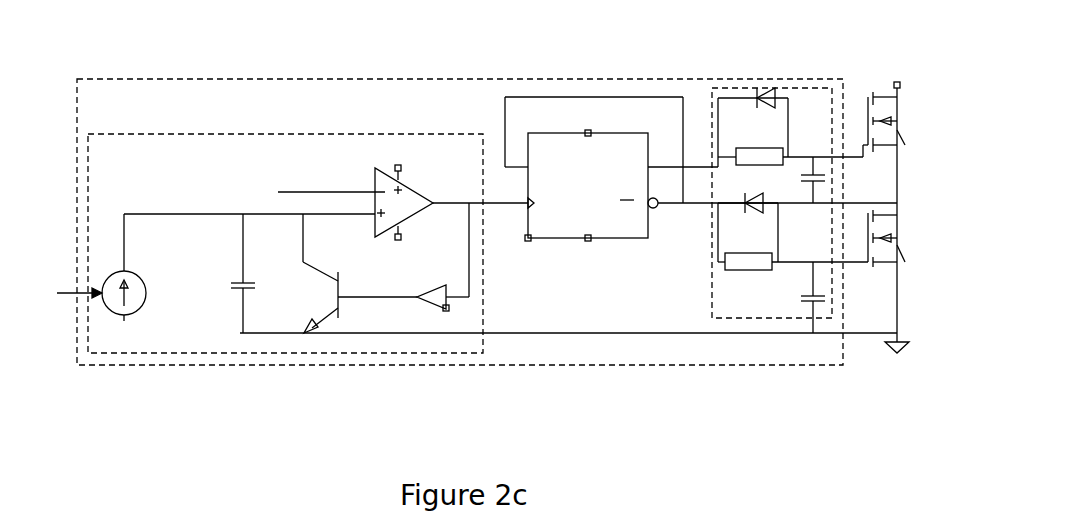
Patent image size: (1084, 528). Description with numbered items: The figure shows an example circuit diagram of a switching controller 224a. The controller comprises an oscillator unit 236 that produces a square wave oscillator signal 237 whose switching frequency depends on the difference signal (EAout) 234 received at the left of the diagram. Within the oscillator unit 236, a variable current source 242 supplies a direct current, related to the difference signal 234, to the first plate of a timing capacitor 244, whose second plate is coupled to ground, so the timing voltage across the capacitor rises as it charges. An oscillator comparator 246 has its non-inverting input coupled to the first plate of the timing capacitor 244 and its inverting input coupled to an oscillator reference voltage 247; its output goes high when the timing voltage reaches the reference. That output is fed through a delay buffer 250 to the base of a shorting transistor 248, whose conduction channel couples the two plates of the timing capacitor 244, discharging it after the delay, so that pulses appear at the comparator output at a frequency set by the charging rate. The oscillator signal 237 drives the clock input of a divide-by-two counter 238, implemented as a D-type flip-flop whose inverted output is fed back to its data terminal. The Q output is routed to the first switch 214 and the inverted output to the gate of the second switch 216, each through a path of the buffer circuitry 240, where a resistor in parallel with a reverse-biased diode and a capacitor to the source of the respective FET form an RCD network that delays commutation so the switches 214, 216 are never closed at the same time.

The switching controller 224a is at (725, 76).
The oscillator unit 236 is at (422, 133).
The difference signal (EAout) 234 is at (67, 295).
The variable current source 242 is at (124, 270).
The timing capacitor 244 is at (245, 289).
The shorting transistor 248 is at (340, 307).
The oscillator reference voltage 247 is at (296, 192).
The oscillator comparator 246 is at (375, 167).
The oscillator signal 237 is at (503, 202).
The delay buffer 250 is at (440, 307).
The divide-by-two counter 238 is at (548, 132).
The buffer circuitry 240 is at (778, 318).
The first switch 214 is at (883, 93).
The second switch 216 is at (887, 262).